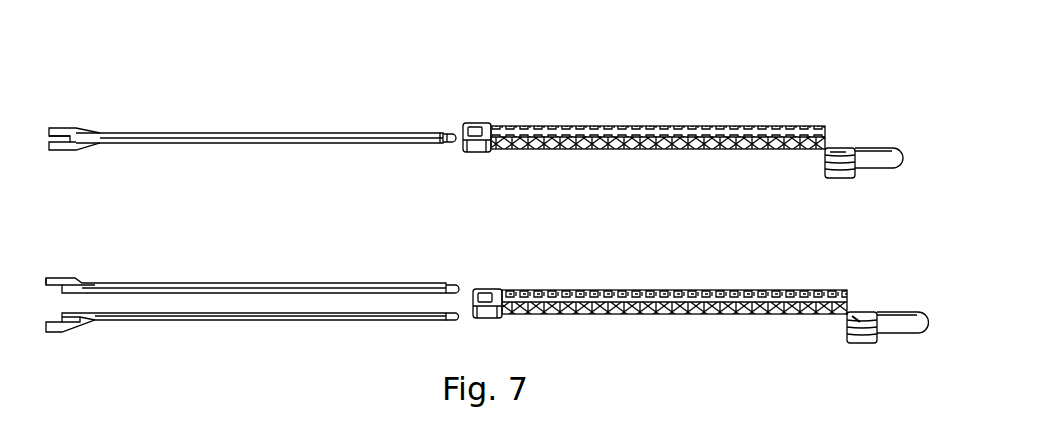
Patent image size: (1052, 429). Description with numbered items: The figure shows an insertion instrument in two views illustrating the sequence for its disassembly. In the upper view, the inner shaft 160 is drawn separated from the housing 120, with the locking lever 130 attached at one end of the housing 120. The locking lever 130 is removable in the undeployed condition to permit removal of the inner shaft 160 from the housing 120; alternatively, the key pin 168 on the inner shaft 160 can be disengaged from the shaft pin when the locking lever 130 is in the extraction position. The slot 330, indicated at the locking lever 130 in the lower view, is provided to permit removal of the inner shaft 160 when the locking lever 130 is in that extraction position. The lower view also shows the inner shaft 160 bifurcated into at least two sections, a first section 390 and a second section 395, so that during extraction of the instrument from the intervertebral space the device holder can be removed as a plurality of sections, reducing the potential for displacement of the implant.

The inner shaft 160 is at (257, 131).
The key pin 168 is at (452, 131).
The housing 120 is at (575, 126).
The locking lever 130 is at (880, 170).
The second section 395 is at (237, 283).
The first section 390 is at (233, 325).
The slot 330 is at (853, 319).